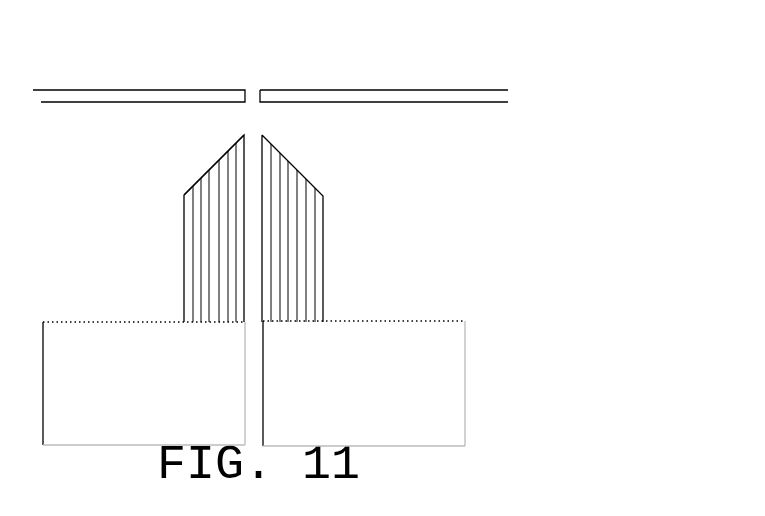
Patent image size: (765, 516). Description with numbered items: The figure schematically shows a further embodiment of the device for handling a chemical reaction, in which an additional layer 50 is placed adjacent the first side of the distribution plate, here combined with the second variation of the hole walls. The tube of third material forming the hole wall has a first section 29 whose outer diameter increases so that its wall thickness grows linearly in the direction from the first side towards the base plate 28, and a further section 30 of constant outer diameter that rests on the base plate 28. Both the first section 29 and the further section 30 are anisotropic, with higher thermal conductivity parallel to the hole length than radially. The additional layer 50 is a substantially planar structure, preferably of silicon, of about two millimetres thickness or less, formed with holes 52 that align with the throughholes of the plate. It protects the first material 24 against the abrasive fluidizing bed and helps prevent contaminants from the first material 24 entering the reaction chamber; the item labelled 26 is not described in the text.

The first material 24 is at (134, 162).
The pillar structure 26 is at (330, 220).
The base plate 28 is at (185, 389).
The first section 29 is at (213, 165).
The further section 30 is at (205, 228).
The additional layer 50 is at (475, 108).
The holes 52 is at (253, 125).